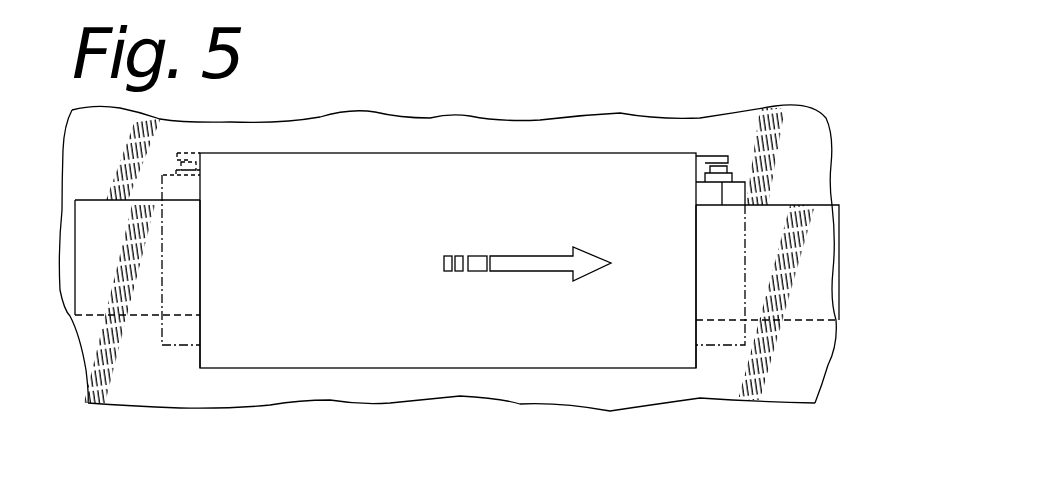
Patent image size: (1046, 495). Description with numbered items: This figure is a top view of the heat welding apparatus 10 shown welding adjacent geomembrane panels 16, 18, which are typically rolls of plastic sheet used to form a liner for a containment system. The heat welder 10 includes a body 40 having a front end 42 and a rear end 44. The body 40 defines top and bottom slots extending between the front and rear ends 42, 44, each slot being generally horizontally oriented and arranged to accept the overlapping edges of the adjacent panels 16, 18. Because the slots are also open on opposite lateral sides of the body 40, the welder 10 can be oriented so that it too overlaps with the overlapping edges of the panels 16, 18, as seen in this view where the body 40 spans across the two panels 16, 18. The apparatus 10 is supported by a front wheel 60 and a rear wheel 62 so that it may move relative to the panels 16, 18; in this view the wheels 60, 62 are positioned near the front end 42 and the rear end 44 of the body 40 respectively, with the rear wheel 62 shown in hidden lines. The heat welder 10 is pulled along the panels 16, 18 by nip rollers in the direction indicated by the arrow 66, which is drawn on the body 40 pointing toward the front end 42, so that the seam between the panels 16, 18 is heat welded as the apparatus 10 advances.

The heat welding apparatus 10 is at (448, 218).
The geomembrane panel 16 is at (799, 392).
The geomembrane panel 18 is at (112, 145).
The body 40 is at (331, 252).
The front end 42 is at (701, 253).
The rear end 44 is at (194, 251).
The front wheel 60 is at (745, 185).
The rear wheel 62 is at (183, 345).
The arrow 66 is at (528, 272).